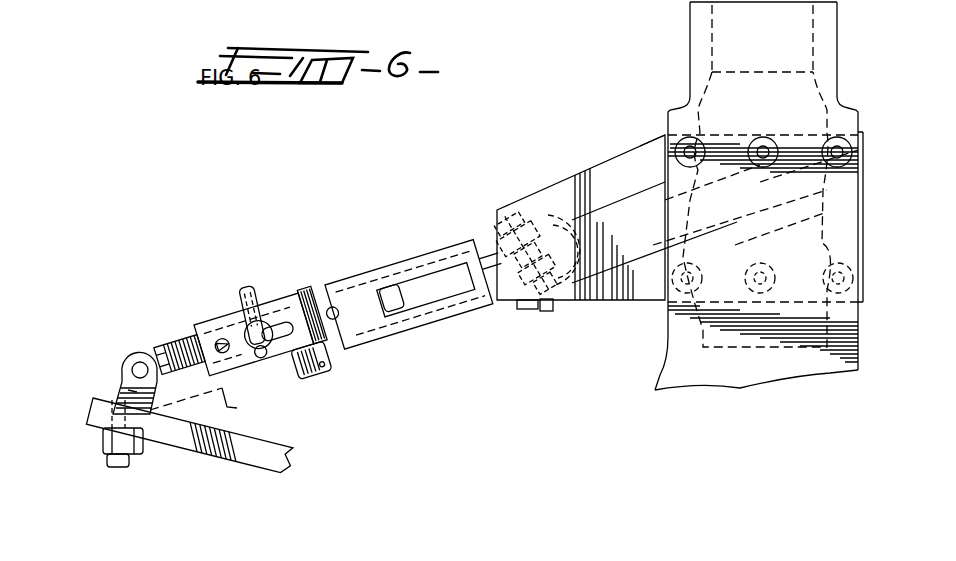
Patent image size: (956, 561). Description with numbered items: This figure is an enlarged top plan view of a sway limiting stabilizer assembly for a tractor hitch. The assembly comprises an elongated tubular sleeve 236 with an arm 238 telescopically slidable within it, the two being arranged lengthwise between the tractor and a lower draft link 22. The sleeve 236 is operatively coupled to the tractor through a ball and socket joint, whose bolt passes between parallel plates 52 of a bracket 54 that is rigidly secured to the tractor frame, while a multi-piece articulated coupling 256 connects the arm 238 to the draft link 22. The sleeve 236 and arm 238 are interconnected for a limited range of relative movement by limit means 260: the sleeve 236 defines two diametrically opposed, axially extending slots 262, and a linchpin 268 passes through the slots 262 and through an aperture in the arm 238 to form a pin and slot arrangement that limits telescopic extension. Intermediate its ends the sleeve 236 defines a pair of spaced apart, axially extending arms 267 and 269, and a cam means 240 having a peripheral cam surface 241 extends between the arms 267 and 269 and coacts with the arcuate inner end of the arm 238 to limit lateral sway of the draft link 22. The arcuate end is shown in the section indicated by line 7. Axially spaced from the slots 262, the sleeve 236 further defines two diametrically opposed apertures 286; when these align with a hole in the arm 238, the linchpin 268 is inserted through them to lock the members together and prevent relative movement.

The section line 7- 7 is at (115, 361).
The lower draft link 22 is at (263, 458).
The parallel plates 52 is at (628, 292).
The bracket 54 is at (637, 192).
The tubular sleeve 236 is at (310, 291).
The arm 238 is at (170, 342).
The cam means 240 is at (438, 277).
The peripheral cam surface 241 is at (398, 298).
The multi-piece articulated coupling 256 is at (125, 347).
The limit means 260 is at (239, 281).
The axially extending slots 262 is at (266, 322).
The axially extending arm 267 is at (397, 265).
The linchpin 268 is at (258, 356).
The axially extending arm 269 is at (455, 320).
The apertures 286 is at (334, 312).